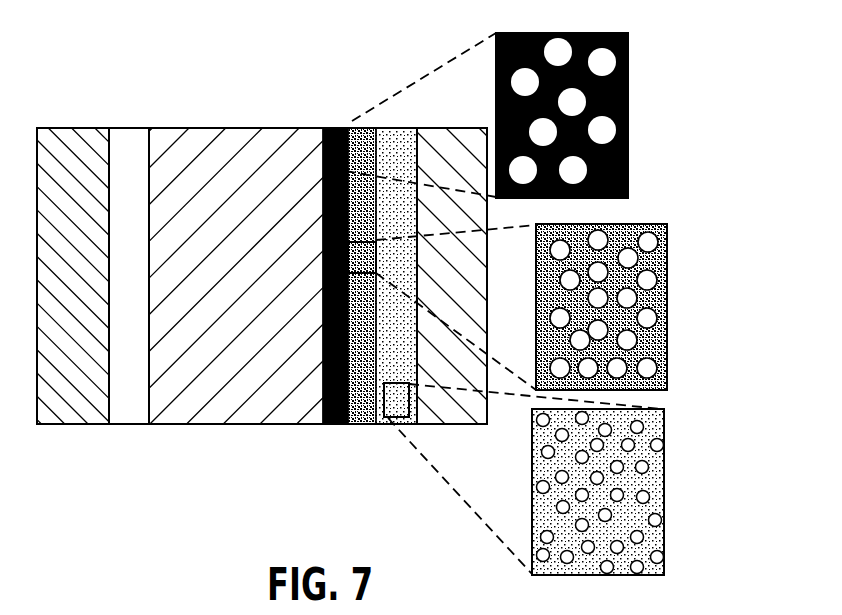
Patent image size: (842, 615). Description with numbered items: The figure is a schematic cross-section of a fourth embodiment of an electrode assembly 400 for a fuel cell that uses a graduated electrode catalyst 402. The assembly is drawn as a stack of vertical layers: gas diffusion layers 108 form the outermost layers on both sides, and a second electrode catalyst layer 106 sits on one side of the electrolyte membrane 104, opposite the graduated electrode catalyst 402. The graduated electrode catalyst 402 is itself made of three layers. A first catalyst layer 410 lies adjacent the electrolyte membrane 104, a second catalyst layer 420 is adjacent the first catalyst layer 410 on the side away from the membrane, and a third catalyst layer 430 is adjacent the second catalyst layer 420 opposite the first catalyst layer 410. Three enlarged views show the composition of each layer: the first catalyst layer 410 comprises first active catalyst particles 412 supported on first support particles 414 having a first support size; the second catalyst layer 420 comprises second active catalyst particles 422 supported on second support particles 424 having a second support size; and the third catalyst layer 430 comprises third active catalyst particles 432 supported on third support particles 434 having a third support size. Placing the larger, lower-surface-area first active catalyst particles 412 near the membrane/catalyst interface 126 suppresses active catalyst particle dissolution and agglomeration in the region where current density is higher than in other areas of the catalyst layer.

The electrode assembly 400 is at (107, 86).
The gas diffusion layers 108 is at (72, 404).
The second electrode catalyst layer 106 is at (130, 404).
The electrolyte membrane 104 is at (247, 404).
The graduated electrode catalyst 402 is at (417, 125).
The first catalyst layer 410 is at (335, 424).
The second catalyst layer 420 is at (362, 412).
The third catalyst layer 430 is at (397, 418).
The membrane/catalyst interface 126 is at (325, 198).
The first active catalyst particles 412 is at (572, 102).
The first support particles 414 is at (627, 162).
The second active catalyst particles 422 is at (648, 242).
The second support particles 424 is at (655, 342).
The third active catalyst particles 432 is at (657, 445).
The third support particles 434 is at (643, 513).